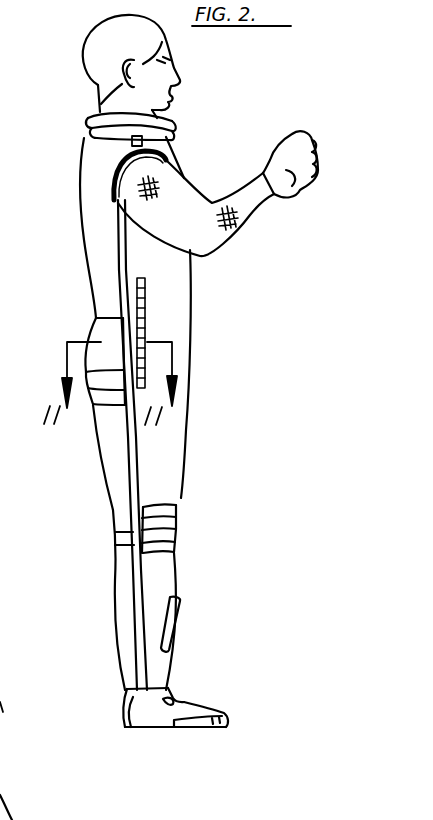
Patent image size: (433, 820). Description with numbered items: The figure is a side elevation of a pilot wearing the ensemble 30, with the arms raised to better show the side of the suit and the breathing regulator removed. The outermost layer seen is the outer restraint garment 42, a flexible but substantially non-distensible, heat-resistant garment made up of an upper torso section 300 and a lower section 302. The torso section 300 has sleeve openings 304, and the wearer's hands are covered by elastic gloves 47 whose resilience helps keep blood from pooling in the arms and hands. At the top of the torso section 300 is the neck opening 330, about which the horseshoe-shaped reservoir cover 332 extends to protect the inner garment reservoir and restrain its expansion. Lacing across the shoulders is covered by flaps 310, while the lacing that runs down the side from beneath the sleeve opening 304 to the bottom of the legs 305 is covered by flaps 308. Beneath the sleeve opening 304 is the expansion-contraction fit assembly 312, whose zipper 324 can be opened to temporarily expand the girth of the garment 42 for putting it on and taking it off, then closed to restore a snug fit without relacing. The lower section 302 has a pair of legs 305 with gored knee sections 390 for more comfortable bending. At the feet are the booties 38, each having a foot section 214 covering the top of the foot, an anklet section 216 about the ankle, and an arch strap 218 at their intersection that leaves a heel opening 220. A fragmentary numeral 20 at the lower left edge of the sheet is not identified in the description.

The neck opening 330 is at (121, 83).
The reservoir cover 332 is at (97, 118).
The outer restraint garment 42 is at (100, 150).
The sleeve openings 304 is at (114, 178).
The upper torso section 300 is at (80, 213).
The flaps 310 is at (246, 114).
The elastic gloves 47 is at (296, 170).
The ensemble 30 is at (204, 311).
The expansion-contraction fit assembly 312 is at (138, 331).
The zipper 324 is at (145, 302).
The flaps 308 is at (130, 437).
The lower section 302 is at (102, 496).
The legs 305 is at (183, 493).
The gored knee sections 390 is at (157, 533).
The booties 38 is at (143, 730).
The anklet section 216 is at (140, 702).
The foot section 214 is at (207, 710).
The arch strap 218 is at (160, 730).
The heel opening 220 is at (123, 723).
The partial numeral (adjacent figure) 20 is at (8, 757).